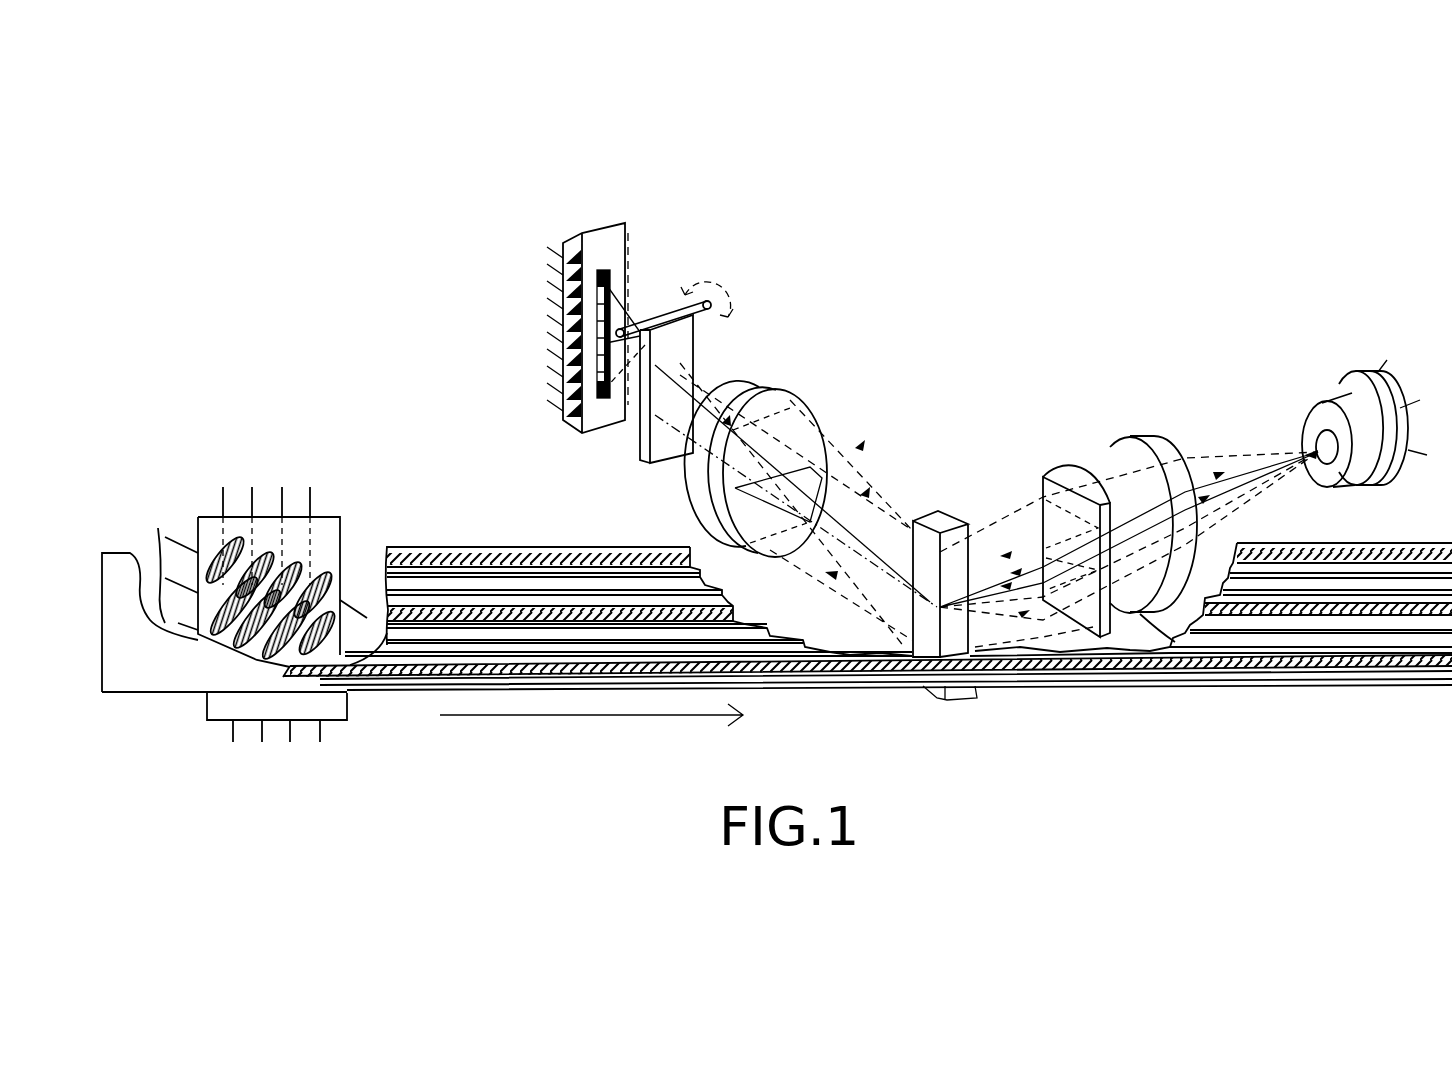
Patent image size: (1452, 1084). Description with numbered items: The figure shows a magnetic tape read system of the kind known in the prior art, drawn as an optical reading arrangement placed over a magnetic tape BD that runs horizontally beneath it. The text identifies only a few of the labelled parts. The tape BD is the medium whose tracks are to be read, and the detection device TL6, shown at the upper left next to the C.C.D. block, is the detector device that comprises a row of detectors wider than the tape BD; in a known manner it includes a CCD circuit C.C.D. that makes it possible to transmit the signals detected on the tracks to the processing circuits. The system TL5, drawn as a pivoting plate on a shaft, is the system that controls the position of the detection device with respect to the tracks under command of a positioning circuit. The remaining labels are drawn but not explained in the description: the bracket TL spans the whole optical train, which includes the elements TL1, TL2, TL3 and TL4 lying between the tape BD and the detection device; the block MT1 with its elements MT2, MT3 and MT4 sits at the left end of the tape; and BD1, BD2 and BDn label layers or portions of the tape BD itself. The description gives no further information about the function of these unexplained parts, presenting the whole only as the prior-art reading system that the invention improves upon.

The telecentric optical measuring system TL is at (1373, 158).
The prism / deflecting element TL1 is at (960, 690).
The light source TL2 is at (1340, 408).
The collimating lens with plate TL3 is at (1137, 410).
The imaging lens TL4 is at (797, 398).
The position control system TL5 is at (683, 333).
The detection device TL6 is at (622, 233).
The CCD circuit C.C.D. is at (587, 310).
The measuring head housing MT1 is at (325, 523).
The measuring fingers / probes MT2 is at (315, 560).
The probe leads MT3 is at (313, 475).
The side connection lines MT4 is at (147, 575).
The tape BD is at (148, 672).
The lower belt layer BD1 is at (423, 680).
The belt carrier layer BD2 is at (490, 679).
The upper belt layers BDn is at (507, 547).